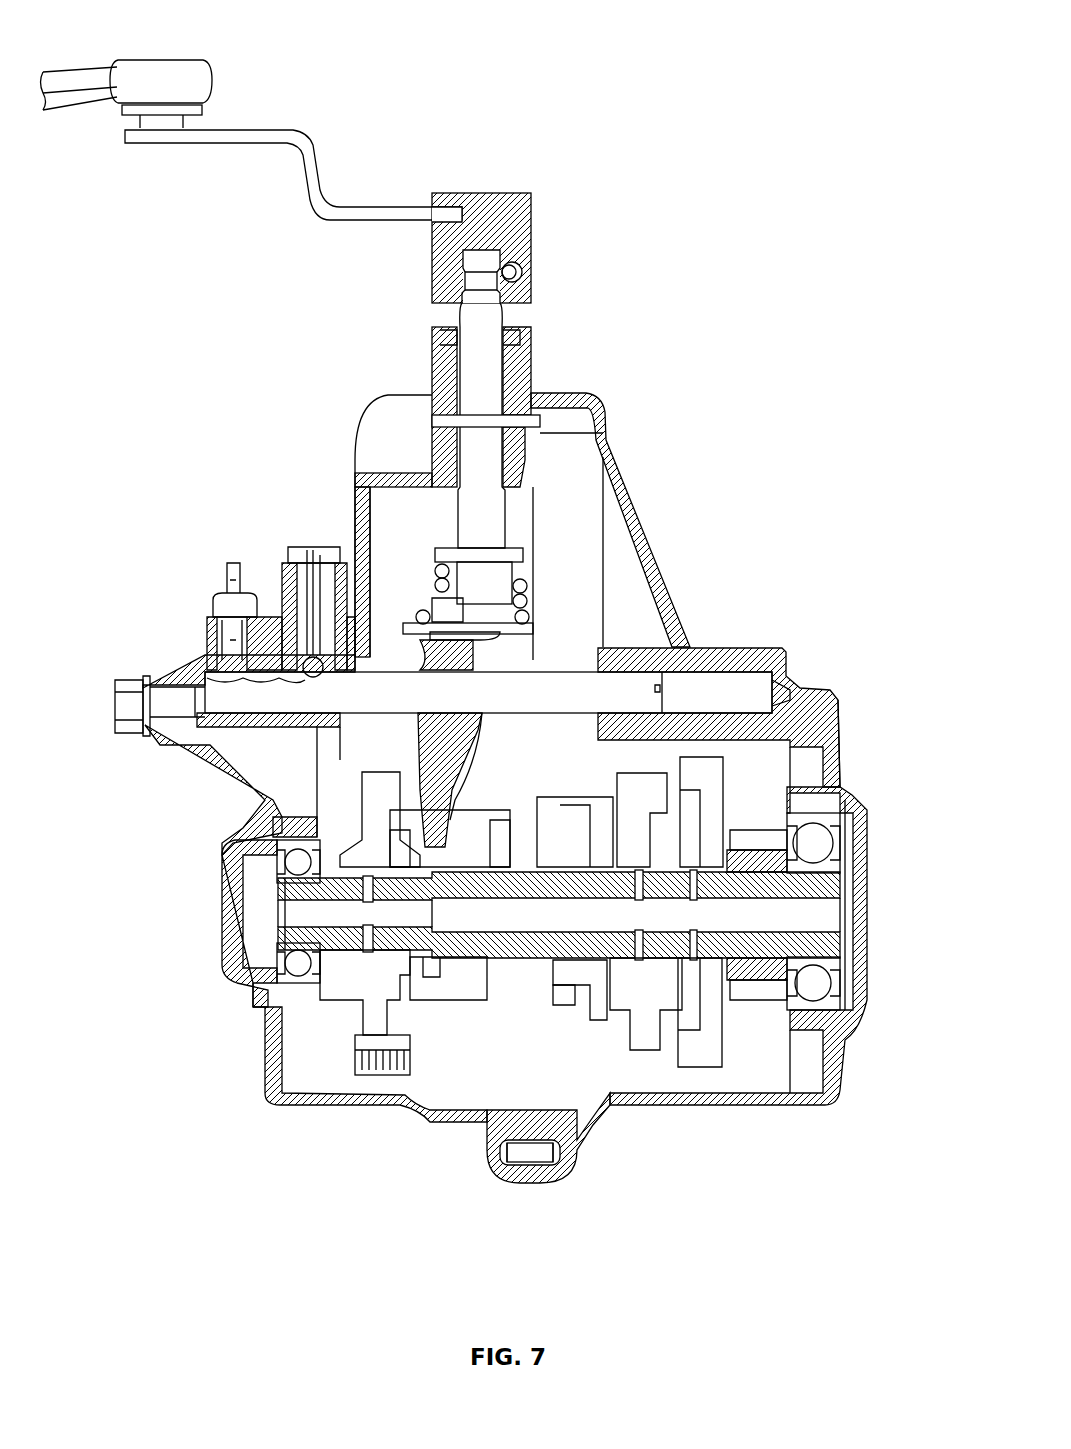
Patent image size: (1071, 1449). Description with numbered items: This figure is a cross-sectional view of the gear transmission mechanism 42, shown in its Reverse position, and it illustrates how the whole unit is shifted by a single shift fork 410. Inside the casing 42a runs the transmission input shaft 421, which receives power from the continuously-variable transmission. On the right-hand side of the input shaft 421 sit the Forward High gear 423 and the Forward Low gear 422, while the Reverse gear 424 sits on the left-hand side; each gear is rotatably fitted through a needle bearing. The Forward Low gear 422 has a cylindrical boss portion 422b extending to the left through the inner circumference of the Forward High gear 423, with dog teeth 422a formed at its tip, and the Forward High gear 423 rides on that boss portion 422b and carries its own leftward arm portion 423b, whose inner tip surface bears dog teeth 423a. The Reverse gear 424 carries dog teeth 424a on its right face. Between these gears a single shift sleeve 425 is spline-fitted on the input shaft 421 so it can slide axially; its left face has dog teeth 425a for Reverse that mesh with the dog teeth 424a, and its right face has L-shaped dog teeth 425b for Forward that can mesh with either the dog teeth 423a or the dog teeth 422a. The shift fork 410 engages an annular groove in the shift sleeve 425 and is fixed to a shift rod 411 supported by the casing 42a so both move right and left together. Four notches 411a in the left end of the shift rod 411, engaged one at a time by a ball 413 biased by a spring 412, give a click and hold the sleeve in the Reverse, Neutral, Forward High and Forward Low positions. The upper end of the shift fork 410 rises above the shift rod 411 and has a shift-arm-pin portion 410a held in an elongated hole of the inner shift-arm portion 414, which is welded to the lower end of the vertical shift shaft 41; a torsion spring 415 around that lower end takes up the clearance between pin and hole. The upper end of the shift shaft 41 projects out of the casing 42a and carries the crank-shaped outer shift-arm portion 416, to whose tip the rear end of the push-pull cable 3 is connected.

The push-pull cable 3 is at (78, 70).
The outer shift-arm portion 416 is at (338, 170).
The shift shaft 41 is at (500, 314).
The shift rod 411 is at (555, 675).
The notches 411a is at (265, 660).
The spring 412 is at (287, 572).
The ball 413 is at (310, 670).
The shift fork 410 is at (448, 805).
The shift-arm-pin portion 410a is at (433, 605).
The inner shift-arm portion 414 is at (530, 630).
The torsion spring 415 is at (520, 582).
The gear transmission mechanism 42 is at (805, 688).
The casing 42a is at (843, 750).
The transmission input shaft 421 is at (838, 885).
The Forward Low gear 422 is at (700, 1065).
The dog teeth 422a is at (587, 845).
The boss portion 422b is at (640, 975).
The Forward High gear 423 is at (637, 1045).
The dog teeth 423a is at (530, 990).
The arm portion 423b is at (575, 1000).
The Reverse gear 424 is at (370, 1010).
The dog teeth 424a is at (410, 1010).
The shift sleeve 425 is at (463, 990).
The dog teeth for Reverse 425a is at (407, 840).
The dog teeth for Forward 425b is at (507, 835).